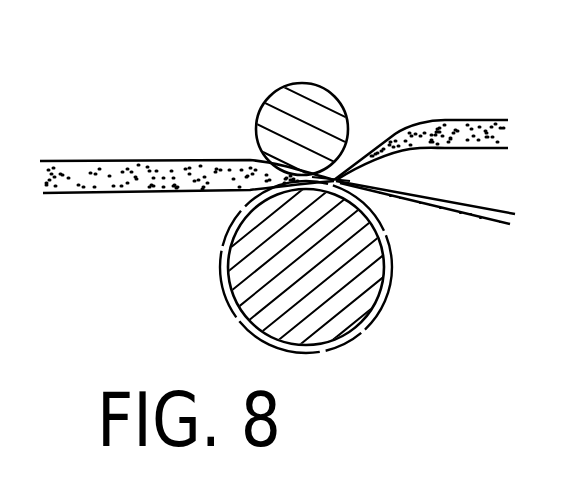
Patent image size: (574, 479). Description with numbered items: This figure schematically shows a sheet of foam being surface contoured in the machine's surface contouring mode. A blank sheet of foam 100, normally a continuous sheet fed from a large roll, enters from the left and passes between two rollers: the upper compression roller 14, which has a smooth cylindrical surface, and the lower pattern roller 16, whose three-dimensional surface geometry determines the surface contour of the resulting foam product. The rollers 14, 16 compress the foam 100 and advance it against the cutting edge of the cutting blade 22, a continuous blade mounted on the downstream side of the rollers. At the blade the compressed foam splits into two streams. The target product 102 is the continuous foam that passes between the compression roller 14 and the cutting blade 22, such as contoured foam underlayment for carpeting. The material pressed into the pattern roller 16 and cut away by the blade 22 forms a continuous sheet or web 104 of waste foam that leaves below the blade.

The compression roller 14 is at (320, 86).
The pattern roller 16 is at (380, 311).
The cutting blade 22 is at (333, 179).
The blank sheet of foam 100 is at (185, 183).
The target product 102 is at (482, 128).
The continuous sheet or web of waste foam 104 is at (477, 223).